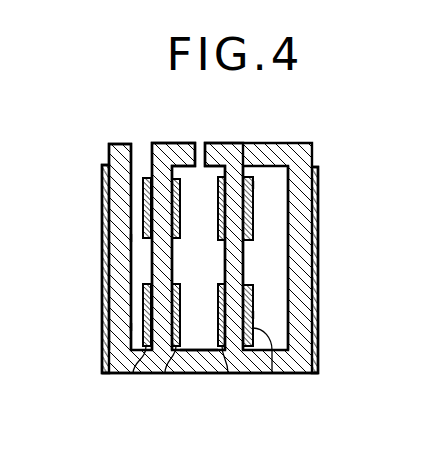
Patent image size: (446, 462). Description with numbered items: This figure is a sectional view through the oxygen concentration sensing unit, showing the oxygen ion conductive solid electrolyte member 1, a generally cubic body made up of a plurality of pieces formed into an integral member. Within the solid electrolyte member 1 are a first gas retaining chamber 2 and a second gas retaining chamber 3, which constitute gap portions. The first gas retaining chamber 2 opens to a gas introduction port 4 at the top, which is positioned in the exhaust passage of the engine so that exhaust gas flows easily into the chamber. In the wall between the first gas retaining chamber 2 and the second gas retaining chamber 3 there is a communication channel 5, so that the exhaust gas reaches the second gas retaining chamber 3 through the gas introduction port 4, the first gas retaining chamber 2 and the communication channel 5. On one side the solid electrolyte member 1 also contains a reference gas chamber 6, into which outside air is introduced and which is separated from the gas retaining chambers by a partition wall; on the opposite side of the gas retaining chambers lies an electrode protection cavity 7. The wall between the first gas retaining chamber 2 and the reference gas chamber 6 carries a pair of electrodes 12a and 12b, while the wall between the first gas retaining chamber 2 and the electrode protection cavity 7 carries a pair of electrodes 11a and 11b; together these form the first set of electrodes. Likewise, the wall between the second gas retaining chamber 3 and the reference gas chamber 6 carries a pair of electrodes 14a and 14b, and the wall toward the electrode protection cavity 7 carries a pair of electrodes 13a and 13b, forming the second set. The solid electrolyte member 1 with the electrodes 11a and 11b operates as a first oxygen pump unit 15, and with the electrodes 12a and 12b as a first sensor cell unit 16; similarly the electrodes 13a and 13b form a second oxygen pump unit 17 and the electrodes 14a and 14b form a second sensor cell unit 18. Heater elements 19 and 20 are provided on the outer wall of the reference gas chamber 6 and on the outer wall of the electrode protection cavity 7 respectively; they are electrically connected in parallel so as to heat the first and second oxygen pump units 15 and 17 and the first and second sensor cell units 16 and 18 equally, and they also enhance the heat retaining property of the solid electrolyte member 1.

The oxygen ion conductive solid electrolyte member 1 is at (301, 142).
The first gas retaining chamber 2 is at (183, 139).
The second gas retaining chamber 3 is at (200, 371).
The gas introduction port 4 is at (203, 139).
The communication channel 5 is at (199, 264).
The reference gas chamber 6 is at (290, 266).
The electrode protection cavity 7 is at (135, 139).
The electrode 11a is at (143, 201).
The electrode 11b is at (180, 214).
The electrode 12a is at (256, 212).
The electrode 12b is at (218, 213).
The electrode 13a is at (133, 373).
The electrode 13b is at (165, 374).
The electrode 14a is at (272, 373).
The electrode 14b is at (228, 373).
The first oxygen pump unit 15 is at (126, 241).
The first sensor cell unit 16 is at (262, 181).
The second oxygen pump unit 17 is at (124, 329).
The second sensor cell unit 18 is at (266, 312).
The heater element 19 is at (106, 291).
The heater element 20 is at (319, 322).